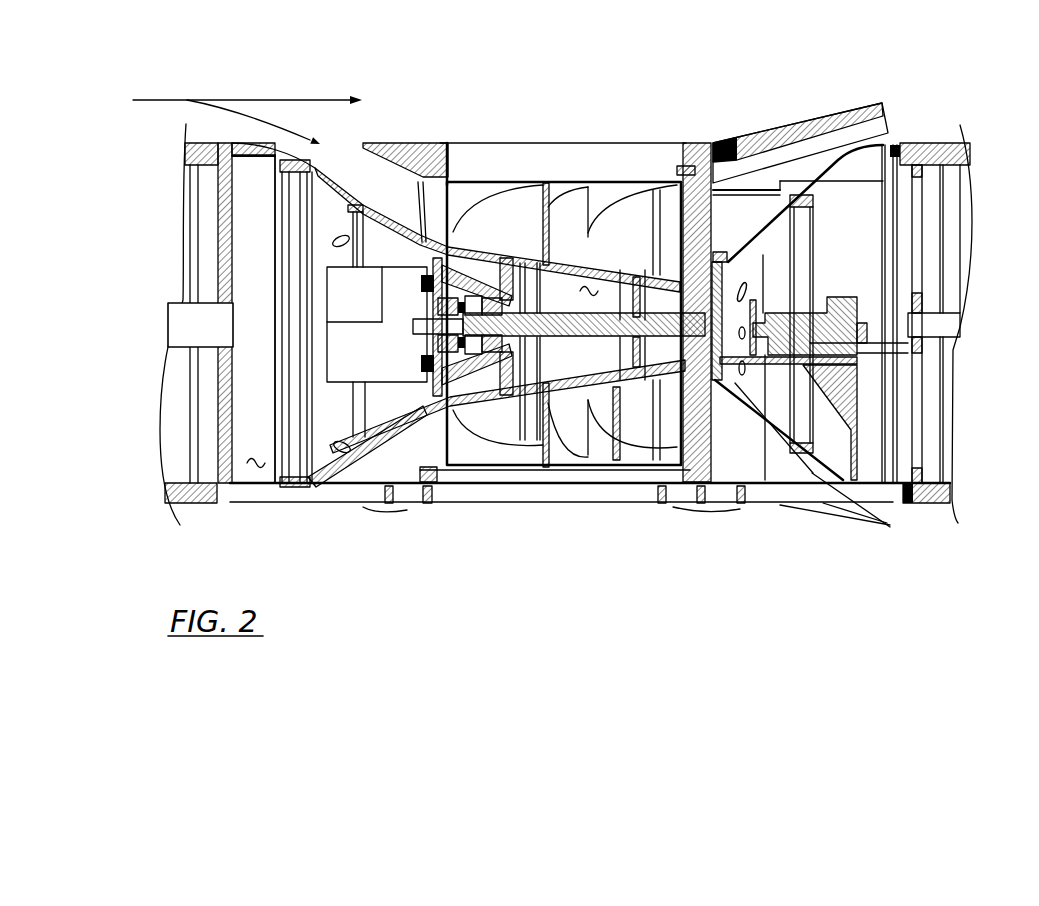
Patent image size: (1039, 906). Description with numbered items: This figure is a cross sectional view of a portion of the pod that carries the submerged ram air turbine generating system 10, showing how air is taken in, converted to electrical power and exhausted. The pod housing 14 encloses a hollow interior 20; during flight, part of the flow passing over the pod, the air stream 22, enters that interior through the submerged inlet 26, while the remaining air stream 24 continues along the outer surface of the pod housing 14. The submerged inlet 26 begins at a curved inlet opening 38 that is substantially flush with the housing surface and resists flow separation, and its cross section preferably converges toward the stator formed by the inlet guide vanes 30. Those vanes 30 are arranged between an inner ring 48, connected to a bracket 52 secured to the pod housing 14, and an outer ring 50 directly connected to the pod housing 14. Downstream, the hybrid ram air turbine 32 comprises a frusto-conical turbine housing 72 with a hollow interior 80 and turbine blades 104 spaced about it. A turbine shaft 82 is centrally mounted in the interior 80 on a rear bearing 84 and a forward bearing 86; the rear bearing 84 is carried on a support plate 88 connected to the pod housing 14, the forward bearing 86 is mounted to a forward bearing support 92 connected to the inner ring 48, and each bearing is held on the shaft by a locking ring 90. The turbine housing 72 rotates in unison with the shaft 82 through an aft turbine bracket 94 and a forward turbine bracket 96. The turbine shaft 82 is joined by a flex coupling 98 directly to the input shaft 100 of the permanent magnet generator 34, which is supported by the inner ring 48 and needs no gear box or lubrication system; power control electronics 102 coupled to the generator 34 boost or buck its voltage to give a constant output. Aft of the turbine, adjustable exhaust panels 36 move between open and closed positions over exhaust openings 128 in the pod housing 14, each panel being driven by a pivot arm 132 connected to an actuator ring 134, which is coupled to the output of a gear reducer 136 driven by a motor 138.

The submerged ram air turbine generating system 10 is at (733, 64).
The pod housing 14 is at (195, 520).
The hollow interior 20 is at (255, 466).
The air stream 22 is at (273, 122).
The air stream 24 is at (273, 99).
The submerged inlet 26 is at (332, 148).
The inlet guide vanes 30 is at (362, 497).
The hybrid ram air turbine 32 is at (563, 238).
The permanent magnet generator 34 is at (327, 366).
The adjustable exhaust panels 36 is at (805, 108).
The curved inlet opening 38 is at (218, 166).
The inner ring 48 is at (393, 470).
The outer ring 50 is at (453, 470).
The bracket 52 is at (323, 473).
The turbine housing 72 is at (513, 236).
The hollow interior 80 is at (588, 285).
The turbine shaft 82 is at (575, 400).
The rear bearing 84 is at (672, 455).
The forward bearing 86 is at (543, 250).
The support plate 88 is at (690, 141).
The locking ring 90 is at (757, 400).
The forward bearing support 92 is at (462, 262).
The aft turbine bracket 94 is at (660, 455).
The forward turbine bracket 96 is at (560, 400).
The flex coupling 98 is at (470, 432).
The input shaft 100 is at (420, 348).
The power control electronics 102 is at (343, 313).
The turbine blades 104 is at (628, 217).
The exhaust openings 128 is at (884, 145).
The pivot arm 132 is at (744, 282).
The actuator ring 134 is at (757, 297).
The gear reducer 136 is at (785, 357).
The motor 138 is at (857, 302).